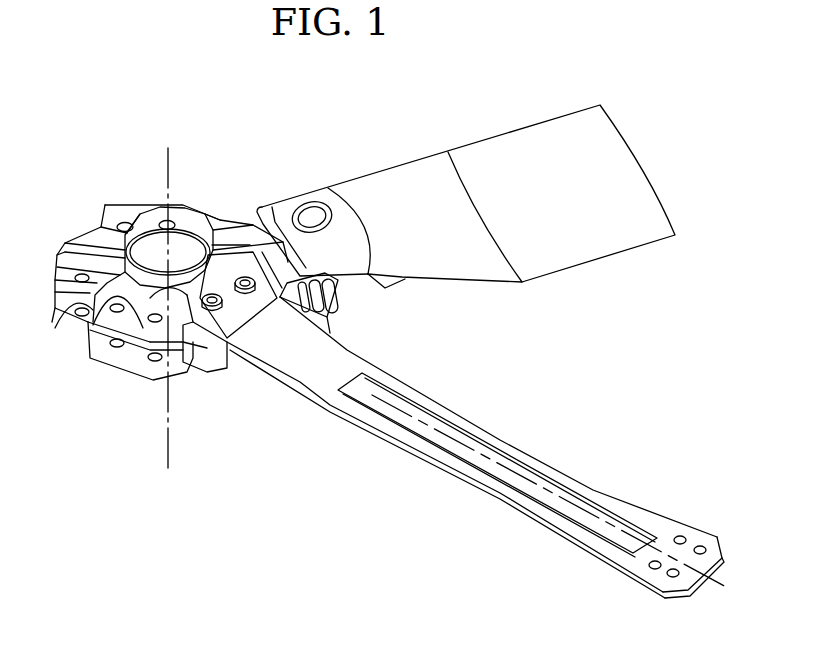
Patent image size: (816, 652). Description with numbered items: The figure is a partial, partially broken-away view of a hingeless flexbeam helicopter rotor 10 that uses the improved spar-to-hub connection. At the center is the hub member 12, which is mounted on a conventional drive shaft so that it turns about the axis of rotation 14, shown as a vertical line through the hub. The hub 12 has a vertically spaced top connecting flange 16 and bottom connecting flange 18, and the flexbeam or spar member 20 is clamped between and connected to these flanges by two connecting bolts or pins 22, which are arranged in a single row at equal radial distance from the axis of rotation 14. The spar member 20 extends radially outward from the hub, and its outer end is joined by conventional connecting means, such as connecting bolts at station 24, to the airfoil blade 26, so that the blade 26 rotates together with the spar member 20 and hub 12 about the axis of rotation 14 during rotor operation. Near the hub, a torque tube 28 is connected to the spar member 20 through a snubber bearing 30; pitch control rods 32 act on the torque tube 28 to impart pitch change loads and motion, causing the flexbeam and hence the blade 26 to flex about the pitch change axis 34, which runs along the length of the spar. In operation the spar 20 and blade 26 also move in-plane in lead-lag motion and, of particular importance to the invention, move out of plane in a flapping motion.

The hingeless flexbeam helicopter rotor 10 is at (267, 137).
The hub member 12 is at (200, 378).
The axis of rotation 14 is at (170, 176).
The top connecting flange 16 is at (60, 318).
The bottom connecting flange 18 is at (140, 362).
The flexbeam or spar member 20 is at (502, 498).
The connecting bolts or pins 22 is at (247, 283).
The station 24 is at (657, 572).
The airfoil blade 26 is at (522, 143).
The torque tube 28 is at (267, 202).
The snubber bearing 30 is at (308, 205).
The pitch control rods 32 is at (327, 322).
The pitch change axis 34 is at (492, 457).